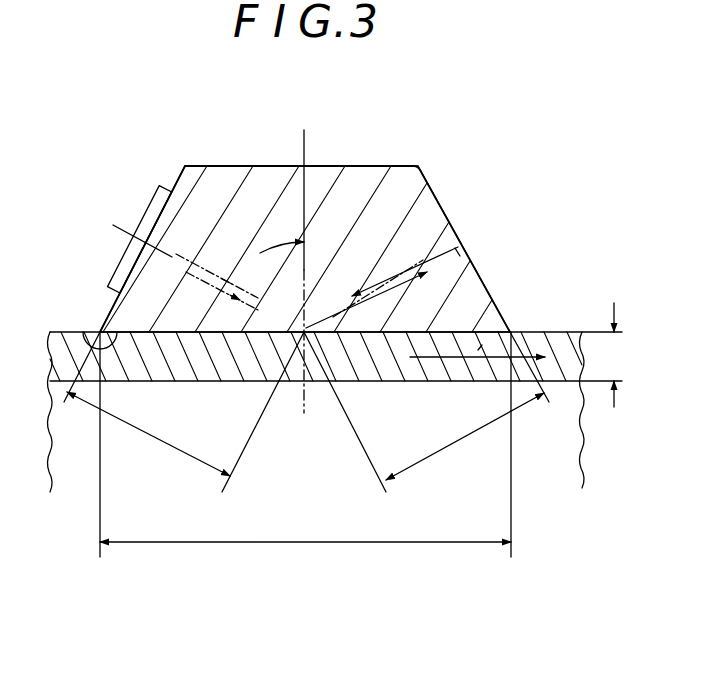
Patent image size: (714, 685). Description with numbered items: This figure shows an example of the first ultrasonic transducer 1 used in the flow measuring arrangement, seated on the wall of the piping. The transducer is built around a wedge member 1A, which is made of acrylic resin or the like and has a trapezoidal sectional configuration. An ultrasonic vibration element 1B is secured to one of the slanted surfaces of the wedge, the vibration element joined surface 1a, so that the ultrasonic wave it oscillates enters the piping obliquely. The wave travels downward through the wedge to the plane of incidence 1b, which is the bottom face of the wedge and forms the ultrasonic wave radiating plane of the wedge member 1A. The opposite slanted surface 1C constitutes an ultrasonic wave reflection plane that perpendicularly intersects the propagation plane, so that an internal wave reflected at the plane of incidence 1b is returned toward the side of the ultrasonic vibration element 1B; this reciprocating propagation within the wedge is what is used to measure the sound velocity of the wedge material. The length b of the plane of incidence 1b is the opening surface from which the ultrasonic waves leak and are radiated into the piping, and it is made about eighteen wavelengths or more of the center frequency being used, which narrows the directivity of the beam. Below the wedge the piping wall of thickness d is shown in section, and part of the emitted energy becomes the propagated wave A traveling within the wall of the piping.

The first ultrasonic transducer 1 is at (410, 162).
The wedge member 1A is at (233, 175).
The vibration element joined surface 1a is at (180, 177).
The ultrasonic vibration element 1B is at (147, 203).
The plane of incidence 1b is at (82, 332).
The slanted surface 1C is at (425, 175).
The propagated wave A is at (482, 345).
The wall thickness of the piping d is at (615, 357).
The length of the plane of incidence b is at (304, 545).